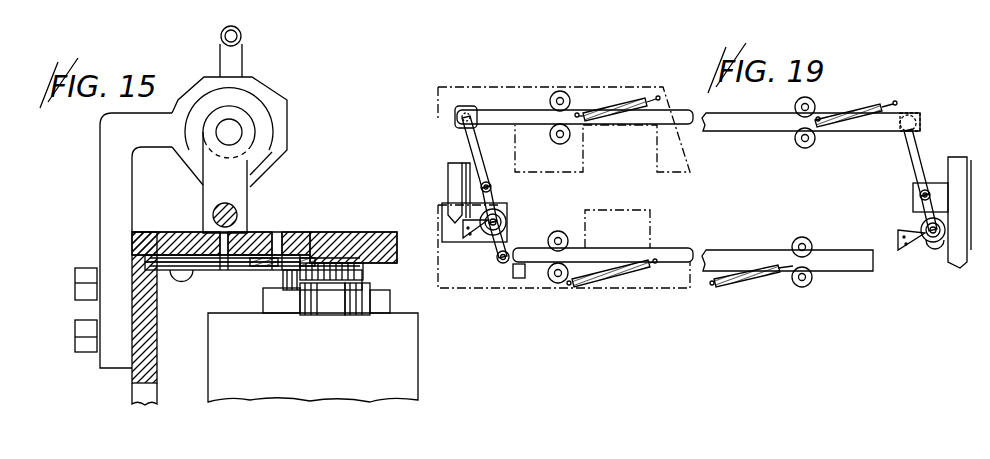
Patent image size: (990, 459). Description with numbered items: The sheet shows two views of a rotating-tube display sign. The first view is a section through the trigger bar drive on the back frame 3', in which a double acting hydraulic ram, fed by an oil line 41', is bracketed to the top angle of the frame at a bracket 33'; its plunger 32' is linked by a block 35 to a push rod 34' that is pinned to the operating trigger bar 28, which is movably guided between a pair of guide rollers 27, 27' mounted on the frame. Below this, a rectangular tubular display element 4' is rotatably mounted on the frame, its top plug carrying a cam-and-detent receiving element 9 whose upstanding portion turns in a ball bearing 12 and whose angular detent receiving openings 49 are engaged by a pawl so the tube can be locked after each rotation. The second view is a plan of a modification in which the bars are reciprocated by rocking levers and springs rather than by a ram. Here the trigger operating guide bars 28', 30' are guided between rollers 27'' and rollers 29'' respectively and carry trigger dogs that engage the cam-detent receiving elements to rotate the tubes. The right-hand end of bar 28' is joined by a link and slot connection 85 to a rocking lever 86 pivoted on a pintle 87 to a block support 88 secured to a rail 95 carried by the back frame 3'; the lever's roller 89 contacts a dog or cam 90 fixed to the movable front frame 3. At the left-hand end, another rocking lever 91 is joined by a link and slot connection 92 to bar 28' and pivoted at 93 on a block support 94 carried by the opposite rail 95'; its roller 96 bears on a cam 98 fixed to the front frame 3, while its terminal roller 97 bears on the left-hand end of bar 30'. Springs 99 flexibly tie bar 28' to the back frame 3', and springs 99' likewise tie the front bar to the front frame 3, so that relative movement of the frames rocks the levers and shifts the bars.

In FIG. 15, the oil line 41' is at (259, 44).
In FIG. 15, the plunger 32' is at (260, 123).
In FIG. 15, the bracket 33' is at (112, 240).
In FIG. 15, the block 35 is at (283, 183).
In FIG. 15, the push rod 34' is at (257, 201).
In FIG. 15, the guide roller 27 is at (264, 238).
In FIG. 15, the guide roller 27' is at (255, 238).
In FIG. 15, the ball bearing 12 is at (334, 267).
In FIG. 15, the operating trigger bar 28 is at (222, 285).
In FIG. 15, the cam-and-detent receiving element 9 is at (280, 308).
In FIG. 15, the detent receiving openings 49 is at (323, 312).
In FIG. 15, the rectangular tubular display element 4' is at (331, 357).
In FIG. 15, the back frame 3' is at (158, 323).
In FIG. 19, the back frame 3' is at (564, 111).
In FIG. 19, the front frame 3 is at (565, 267).
In FIG. 19, the link and slot connection 92 is at (457, 119).
In FIG. 19, the springs 99 is at (617, 86).
In FIG. 19, the springs 99' is at (612, 293).
In FIG. 19, the rocking lever 91 is at (490, 155).
In FIG. 19, the pivot 93 is at (494, 187).
In FIG. 19, the roller 96 is at (510, 213).
In FIG. 19, the terminal roller 97 is at (498, 258).
In FIG. 19, the block support 94 is at (452, 190).
In FIG. 19, the rail 95' is at (429, 178).
In FIG. 19, the dog or cam 98 is at (443, 233).
In FIG. 19, the trigger operating guide bar 30' is at (768, 233).
In FIG. 19, the rollers 29'' is at (761, 248).
In FIG. 19, the trigger operating guide bar 28' is at (810, 143).
In FIG. 19, the rollers 27'' is at (822, 131).
In FIG. 19, the link and slot connection 85 is at (935, 102).
In FIG. 19, the rocking lever 86 is at (916, 147).
In FIG. 19, the pintle 87 is at (921, 194).
In FIG. 19, the roller 89 is at (927, 245).
In FIG. 19, the dog or cam 90 is at (898, 233).
In FIG. 19, the block support 88 is at (938, 173).
In FIG. 19, the rail 95 is at (950, 236).